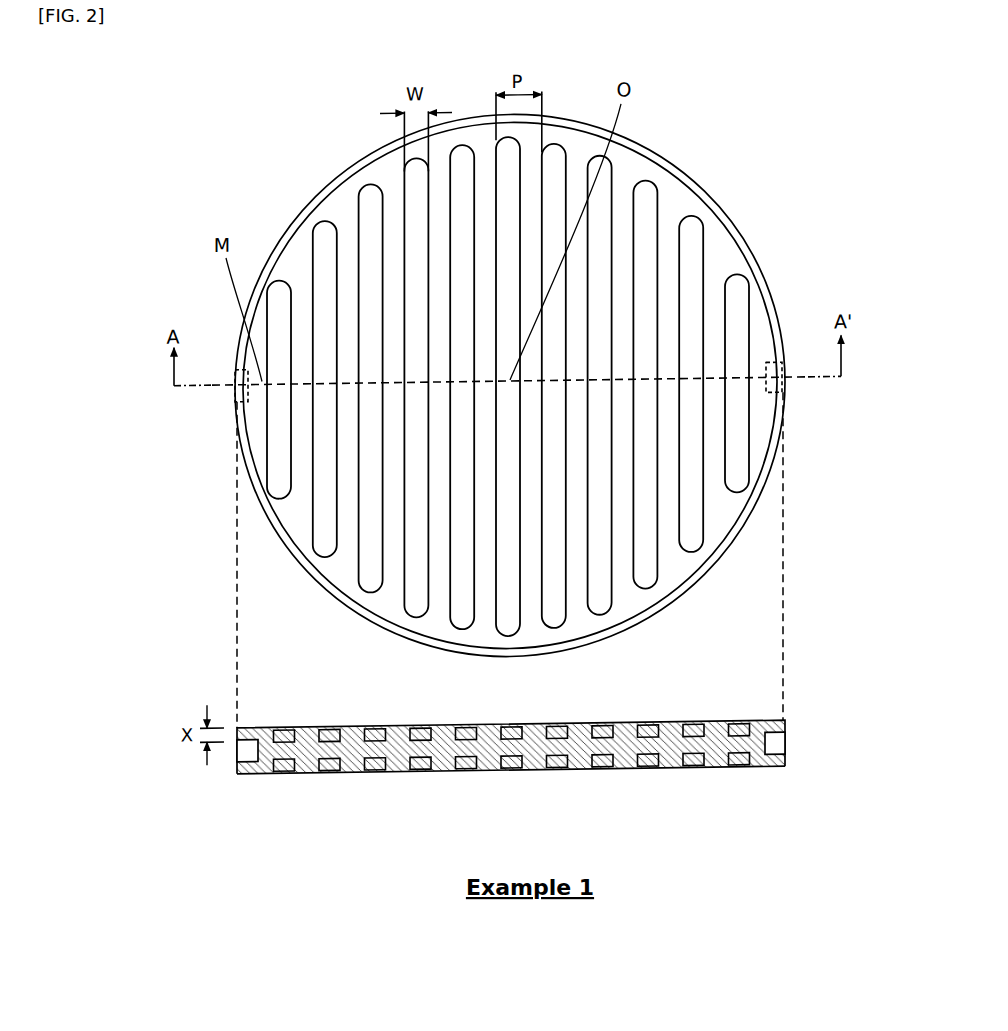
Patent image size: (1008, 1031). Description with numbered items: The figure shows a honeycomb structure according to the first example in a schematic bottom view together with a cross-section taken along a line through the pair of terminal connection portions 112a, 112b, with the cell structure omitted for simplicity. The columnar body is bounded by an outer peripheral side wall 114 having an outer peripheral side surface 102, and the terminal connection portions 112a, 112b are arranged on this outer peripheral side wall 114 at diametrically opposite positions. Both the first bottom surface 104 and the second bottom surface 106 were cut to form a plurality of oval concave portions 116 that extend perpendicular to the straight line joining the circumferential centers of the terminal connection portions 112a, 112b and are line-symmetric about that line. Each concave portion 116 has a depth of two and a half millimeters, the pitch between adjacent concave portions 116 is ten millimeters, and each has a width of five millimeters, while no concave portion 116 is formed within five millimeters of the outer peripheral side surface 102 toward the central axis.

The outer peripheral side surface 102 is at (337, 590).
The first bottom surface 104 is at (582, 724).
The second bottom surface 106 is at (575, 771).
The terminal connection portion 112a is at (235, 388).
The terminal connection portion 112b is at (780, 382).
The outer peripheral side wall 114 is at (745, 253).
The oval concave portion 116 is at (697, 225).